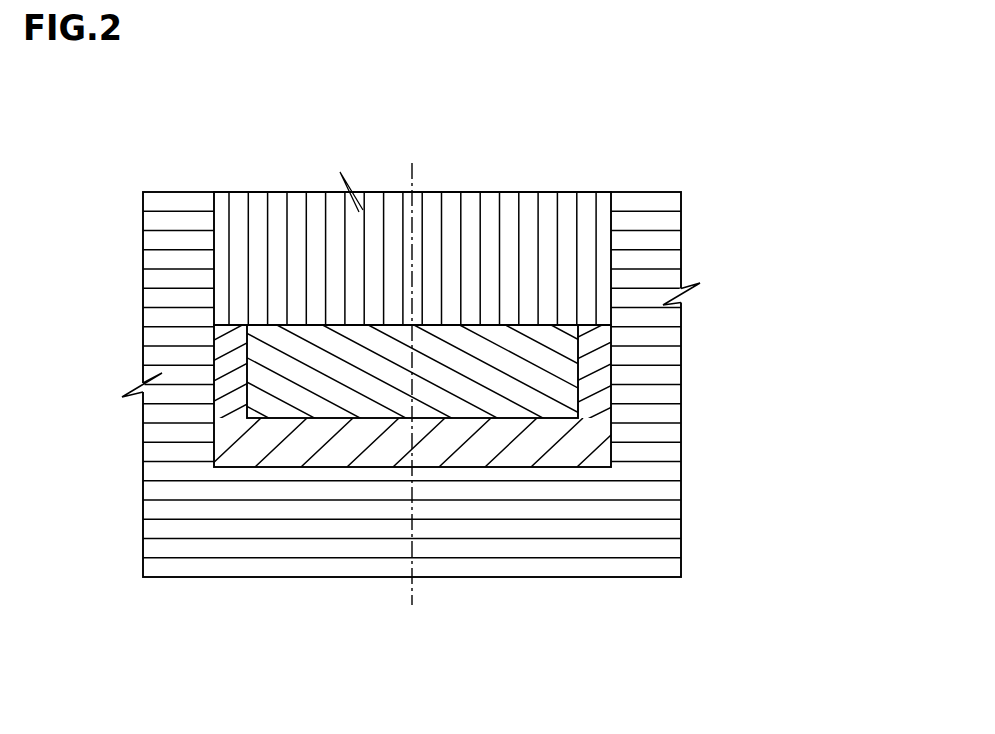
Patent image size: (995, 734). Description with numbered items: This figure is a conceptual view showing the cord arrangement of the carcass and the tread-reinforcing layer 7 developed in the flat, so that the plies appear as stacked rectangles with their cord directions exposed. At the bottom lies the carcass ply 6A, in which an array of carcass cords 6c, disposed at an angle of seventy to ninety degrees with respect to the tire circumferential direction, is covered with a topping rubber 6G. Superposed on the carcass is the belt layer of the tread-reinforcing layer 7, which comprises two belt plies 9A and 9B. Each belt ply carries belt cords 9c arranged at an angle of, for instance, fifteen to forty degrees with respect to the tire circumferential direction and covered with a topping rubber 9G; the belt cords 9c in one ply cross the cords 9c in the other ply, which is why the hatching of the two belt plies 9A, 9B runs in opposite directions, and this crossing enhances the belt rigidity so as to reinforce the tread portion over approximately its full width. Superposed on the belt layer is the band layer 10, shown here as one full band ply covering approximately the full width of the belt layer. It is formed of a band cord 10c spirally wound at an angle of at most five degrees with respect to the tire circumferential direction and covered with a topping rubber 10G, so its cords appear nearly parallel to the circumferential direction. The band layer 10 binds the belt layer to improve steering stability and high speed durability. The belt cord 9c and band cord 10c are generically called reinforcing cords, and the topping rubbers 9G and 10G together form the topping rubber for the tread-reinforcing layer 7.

The tread-reinforcing layer 7 is at (613, 137).
The carcass ply 6A is at (683, 542).
The carcass cords 6c is at (478, 558).
The topping rubber 6G is at (548, 548).
The belt ply 9A is at (577, 381).
The belt ply 9B is at (580, 350).
The topping rubber 9G is at (600, 422).
The belt cords 9c is at (580, 444).
The band layer 10 is at (612, 223).
The band cord 10c is at (481, 213).
The topping rubber 10G is at (545, 210).